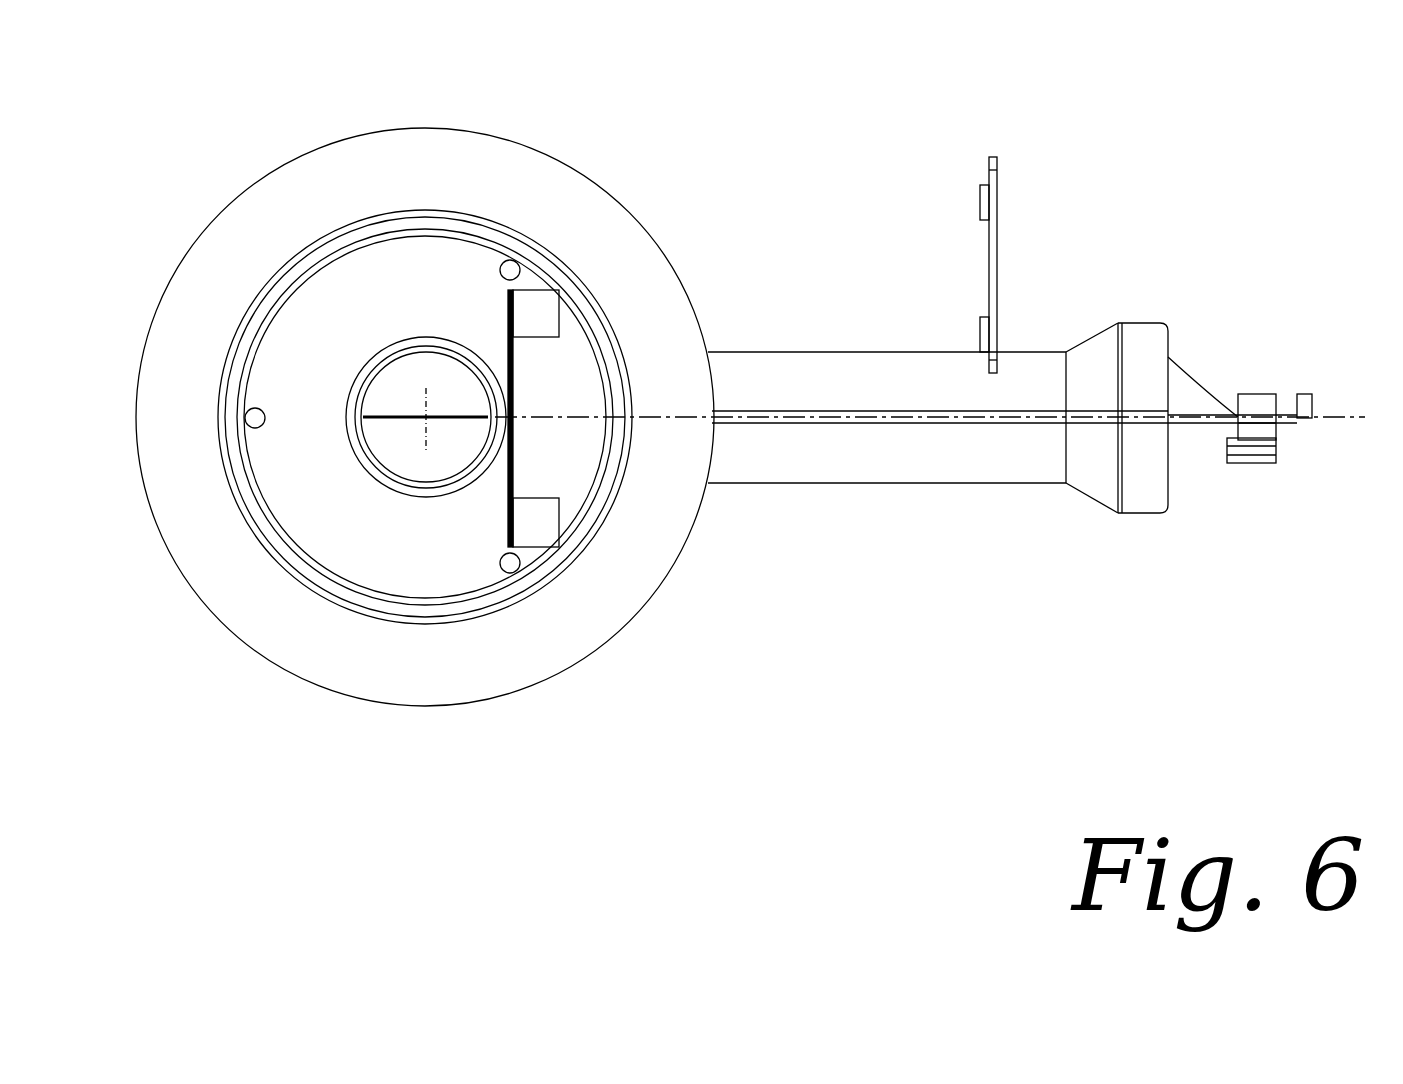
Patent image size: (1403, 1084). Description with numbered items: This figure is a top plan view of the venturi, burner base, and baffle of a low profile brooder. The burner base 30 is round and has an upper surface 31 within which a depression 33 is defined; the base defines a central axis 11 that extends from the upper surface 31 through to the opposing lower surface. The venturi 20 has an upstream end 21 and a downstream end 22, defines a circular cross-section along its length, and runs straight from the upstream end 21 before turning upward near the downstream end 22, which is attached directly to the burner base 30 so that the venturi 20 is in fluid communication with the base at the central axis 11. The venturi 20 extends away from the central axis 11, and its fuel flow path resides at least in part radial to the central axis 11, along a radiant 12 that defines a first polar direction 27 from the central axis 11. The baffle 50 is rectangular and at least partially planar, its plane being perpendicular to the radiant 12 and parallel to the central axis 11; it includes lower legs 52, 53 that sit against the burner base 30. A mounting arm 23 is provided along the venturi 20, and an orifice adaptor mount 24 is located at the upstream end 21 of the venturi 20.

The central axis 11 is at (426, 417).
The radiant 12 is at (658, 417).
The venturi 20 is at (893, 452).
The upstream end 21 is at (1168, 333).
The downstream end 22 is at (440, 355).
The mounting arm 23 is at (997, 250).
The orifice adaptor mount 24 is at (1253, 430).
The first polar direction 27 is at (866, 412).
The burner base 30 is at (272, 617).
The upper surface 31 is at (298, 499).
The depression 33 is at (437, 522).
The baffle 50 is at (513, 457).
The lower leg 52 is at (537, 520).
The lower leg 53 is at (540, 305).